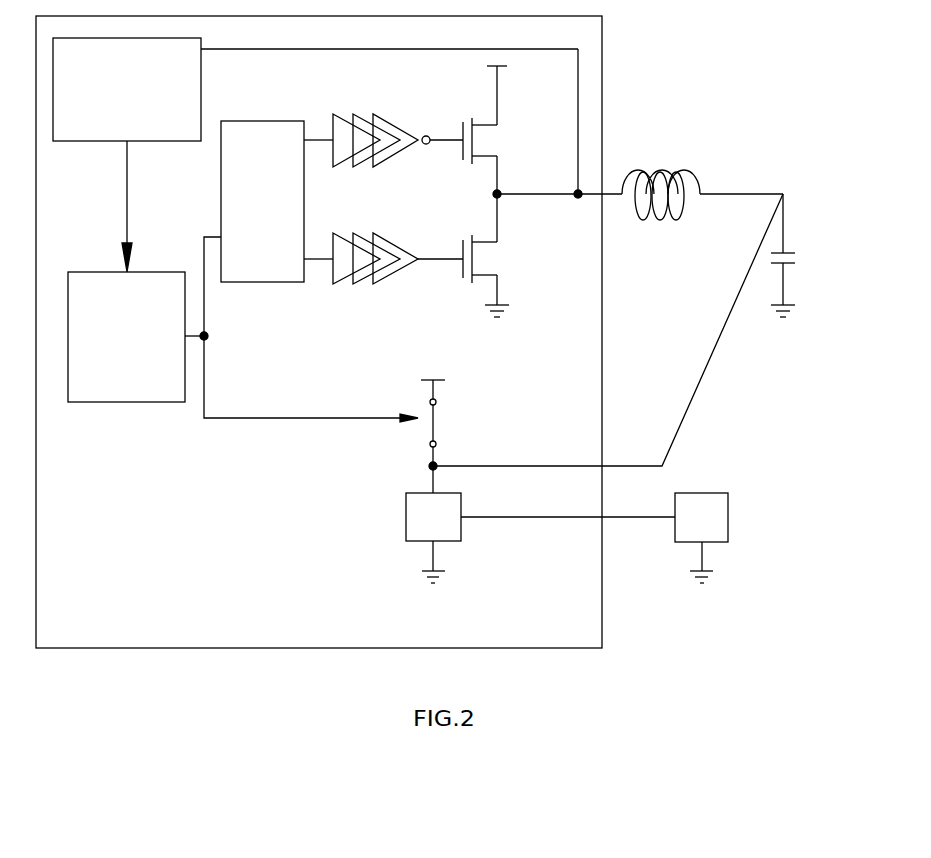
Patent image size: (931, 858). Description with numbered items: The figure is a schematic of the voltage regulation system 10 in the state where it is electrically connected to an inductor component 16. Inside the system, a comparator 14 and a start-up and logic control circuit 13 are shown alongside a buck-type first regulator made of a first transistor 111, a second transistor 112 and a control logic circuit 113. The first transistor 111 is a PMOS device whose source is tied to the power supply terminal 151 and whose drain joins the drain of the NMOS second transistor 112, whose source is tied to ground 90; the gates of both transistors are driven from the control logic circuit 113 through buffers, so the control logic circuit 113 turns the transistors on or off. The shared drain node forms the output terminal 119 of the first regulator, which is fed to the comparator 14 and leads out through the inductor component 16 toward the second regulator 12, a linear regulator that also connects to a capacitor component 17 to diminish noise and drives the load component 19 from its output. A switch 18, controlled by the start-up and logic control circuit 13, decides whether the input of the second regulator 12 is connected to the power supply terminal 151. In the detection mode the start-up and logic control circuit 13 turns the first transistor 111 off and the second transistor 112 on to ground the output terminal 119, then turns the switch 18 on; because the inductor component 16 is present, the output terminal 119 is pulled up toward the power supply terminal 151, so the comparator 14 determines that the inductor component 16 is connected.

The voltage regulation system 10 is at (242, 628).
The comparator 14 is at (139, 116).
The start-up and logic control circuit 13 is at (176, 392).
The control logic circuit 113 is at (333, 93).
The first transistor 111 is at (542, 158).
The second transistor 112 is at (542, 276).
The power supply terminal 151 is at (480, 79).
The ground 90 is at (522, 344).
The output terminal of the first regulator 119 is at (585, 229).
The inductor component 16 is at (670, 153).
The capacitor component 17 is at (833, 271).
The switch 18 is at (475, 431).
The second regulator 12 is at (453, 541).
The load component 19 is at (722, 542).